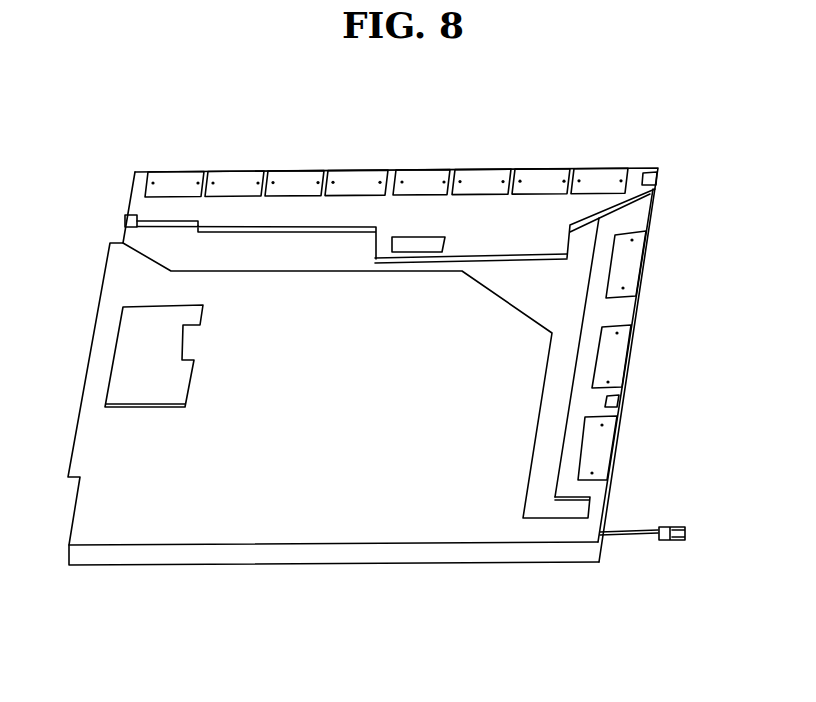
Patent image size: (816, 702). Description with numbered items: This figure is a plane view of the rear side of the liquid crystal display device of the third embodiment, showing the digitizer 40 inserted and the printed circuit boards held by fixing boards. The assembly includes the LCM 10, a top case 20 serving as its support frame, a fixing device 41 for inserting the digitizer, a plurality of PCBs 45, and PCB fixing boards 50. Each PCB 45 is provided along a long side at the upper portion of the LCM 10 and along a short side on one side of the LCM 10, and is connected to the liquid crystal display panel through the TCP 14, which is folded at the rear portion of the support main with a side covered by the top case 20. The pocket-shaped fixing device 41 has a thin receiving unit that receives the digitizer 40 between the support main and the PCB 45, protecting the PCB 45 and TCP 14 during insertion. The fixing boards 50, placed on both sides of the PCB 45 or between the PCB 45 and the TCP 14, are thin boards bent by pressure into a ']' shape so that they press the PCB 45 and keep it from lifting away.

The LCM 10 is at (586, 164).
The TCP 14 is at (353, 180).
The top case 20 is at (612, 470).
The digitizer 40 is at (327, 530).
The fixing device for inserting the digitizer 41 is at (577, 274).
The PCB 45 is at (469, 222).
The PCB fixing board 50 is at (124, 220).